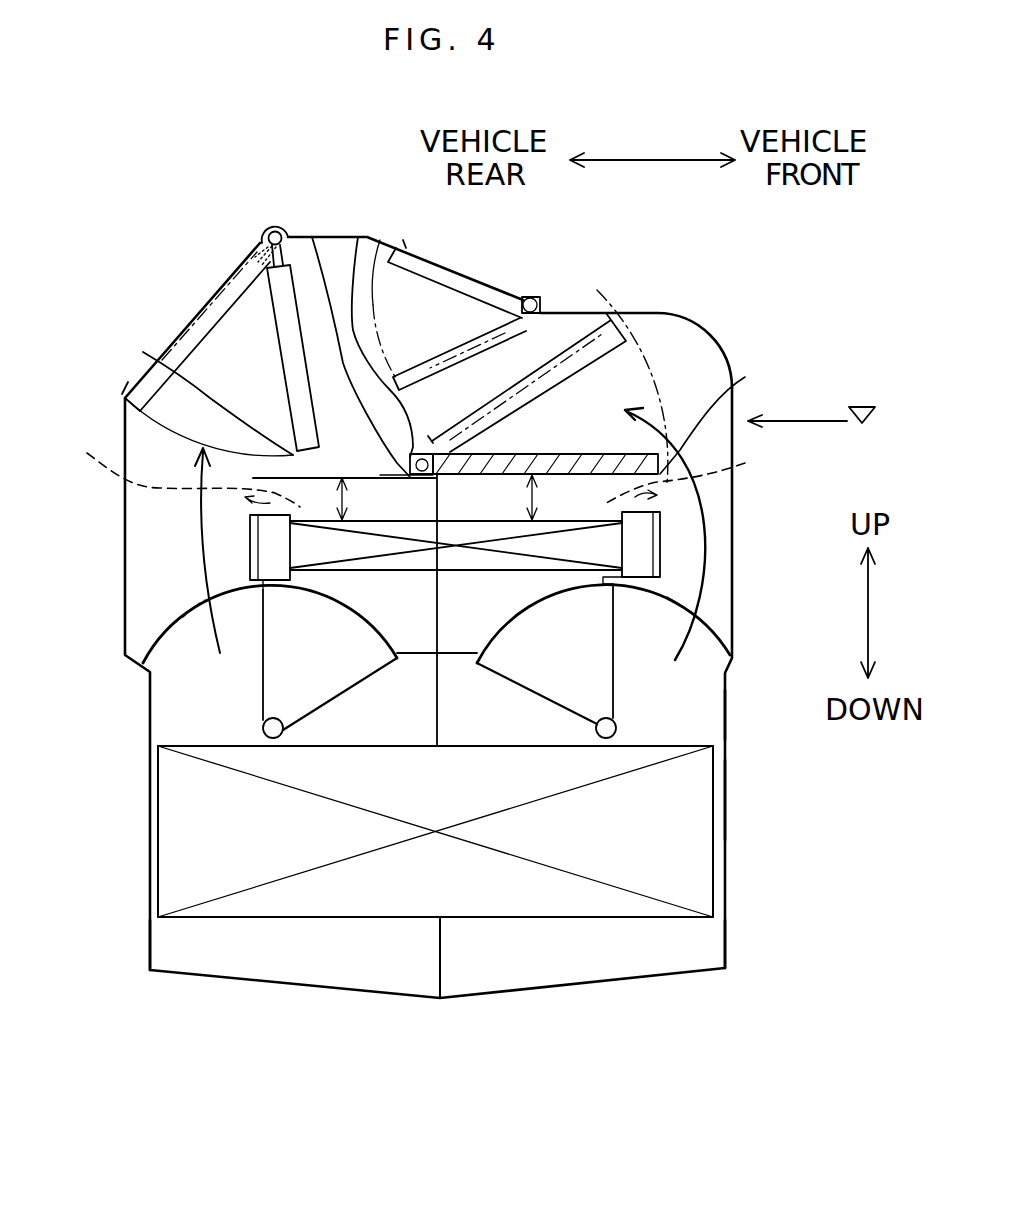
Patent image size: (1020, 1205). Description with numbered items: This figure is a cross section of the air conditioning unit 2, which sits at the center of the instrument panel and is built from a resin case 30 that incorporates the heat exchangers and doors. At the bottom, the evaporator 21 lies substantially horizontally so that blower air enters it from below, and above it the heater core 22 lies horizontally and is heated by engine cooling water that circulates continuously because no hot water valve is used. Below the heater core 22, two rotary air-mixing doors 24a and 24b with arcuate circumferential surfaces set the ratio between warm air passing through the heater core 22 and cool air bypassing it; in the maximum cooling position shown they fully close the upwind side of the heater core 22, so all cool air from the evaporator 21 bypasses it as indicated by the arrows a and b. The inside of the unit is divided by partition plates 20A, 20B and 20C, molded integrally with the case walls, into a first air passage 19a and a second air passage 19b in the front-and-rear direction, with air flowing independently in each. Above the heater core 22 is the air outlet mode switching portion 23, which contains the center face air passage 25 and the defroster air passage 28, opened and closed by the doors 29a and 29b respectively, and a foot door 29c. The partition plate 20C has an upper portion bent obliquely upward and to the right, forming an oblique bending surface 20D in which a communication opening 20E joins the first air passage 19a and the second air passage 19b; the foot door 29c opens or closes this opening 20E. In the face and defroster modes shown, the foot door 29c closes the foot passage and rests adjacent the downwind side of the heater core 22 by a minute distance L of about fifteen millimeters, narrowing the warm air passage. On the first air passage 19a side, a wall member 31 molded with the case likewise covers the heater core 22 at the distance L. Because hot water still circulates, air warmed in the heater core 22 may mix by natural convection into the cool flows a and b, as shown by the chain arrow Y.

The air conditioning unit 2 is at (742, 802).
The first air passage 19a is at (178, 946).
The second air passage 19b is at (693, 948).
The partition plate 20A is at (445, 957).
The partition plate 20B is at (633, 780).
The partition plate 20C is at (312, 237).
The oblique bending surface 20D is at (358, 237).
The communication opening 20E is at (573, 343).
The evaporator 21 is at (673, 850).
The heater core 22 is at (607, 538).
The air outlet mode switching portion 23 is at (690, 322).
The air-mixing door 24a is at (265, 697).
The air-mixing door 24b is at (617, 683).
The center face air passage 25 is at (170, 338).
The defroster air passage 28 is at (483, 280).
The door 29a is at (220, 305).
The door 29b is at (487, 285).
The foot door 29c is at (701, 386).
The case 30 is at (728, 713).
The wall member 31 is at (143, 352).
The chain arrow Y is at (416, 467).
The arrow a is at (707, 547).
The arrow b is at (200, 540).
The minute distance L is at (447, 498).